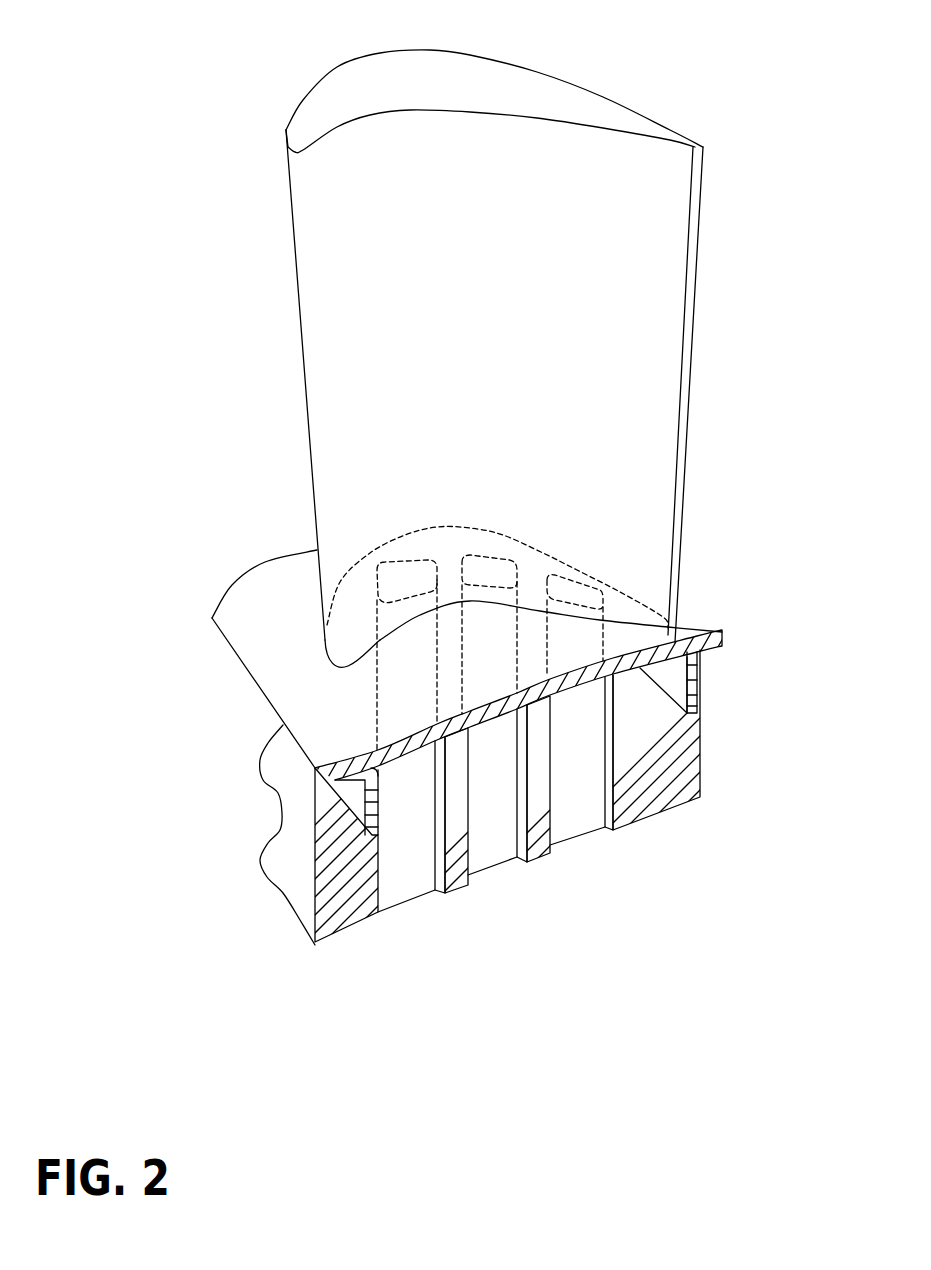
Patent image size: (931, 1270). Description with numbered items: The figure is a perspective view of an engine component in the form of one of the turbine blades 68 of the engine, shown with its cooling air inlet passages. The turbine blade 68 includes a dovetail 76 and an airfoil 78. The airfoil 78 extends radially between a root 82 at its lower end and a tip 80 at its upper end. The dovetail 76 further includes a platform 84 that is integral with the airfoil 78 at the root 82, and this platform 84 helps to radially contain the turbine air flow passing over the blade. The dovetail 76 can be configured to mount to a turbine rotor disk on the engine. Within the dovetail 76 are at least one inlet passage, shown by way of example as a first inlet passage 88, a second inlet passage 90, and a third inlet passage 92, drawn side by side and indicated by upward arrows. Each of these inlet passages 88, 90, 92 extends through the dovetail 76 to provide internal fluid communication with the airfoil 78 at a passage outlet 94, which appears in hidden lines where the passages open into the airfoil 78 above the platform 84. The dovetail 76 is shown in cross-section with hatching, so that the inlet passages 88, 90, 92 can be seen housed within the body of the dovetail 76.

The turbine blade 68 is at (163, 151).
The dovetail 76 is at (303, 821).
The airfoil 78 is at (300, 433).
The tip 80 is at (378, 92).
The root 82 is at (632, 621).
The platform 84 is at (280, 654).
The first inlet passage 88 is at (415, 928).
The second inlet passage 90 is at (498, 906).
The third inlet passage 92 is at (576, 874).
The passage outlet 94 is at (547, 573).